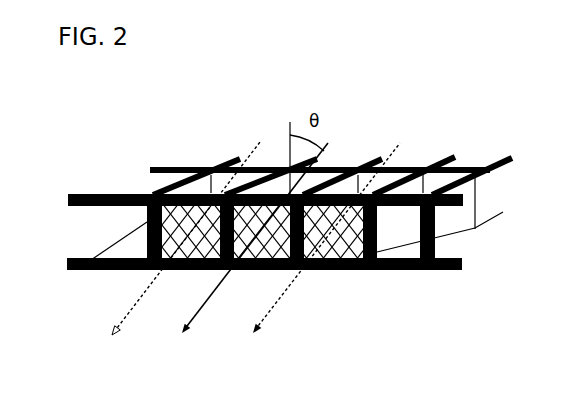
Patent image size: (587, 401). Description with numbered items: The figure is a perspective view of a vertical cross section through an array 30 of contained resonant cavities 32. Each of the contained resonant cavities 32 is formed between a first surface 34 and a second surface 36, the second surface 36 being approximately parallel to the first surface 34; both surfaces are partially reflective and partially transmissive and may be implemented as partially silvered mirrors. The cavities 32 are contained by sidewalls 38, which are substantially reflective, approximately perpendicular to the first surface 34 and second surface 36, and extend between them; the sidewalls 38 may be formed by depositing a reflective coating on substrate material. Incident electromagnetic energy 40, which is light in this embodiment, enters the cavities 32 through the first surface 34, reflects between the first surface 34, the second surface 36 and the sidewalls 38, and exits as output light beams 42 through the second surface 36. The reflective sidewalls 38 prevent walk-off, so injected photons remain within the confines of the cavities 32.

The array 30 is at (389, 100).
The contained resonant cavities 32 is at (193, 247).
The first surface 34 is at (128, 178).
The second surface 36 is at (120, 244).
The sidewalls 38 is at (228, 162).
The incident electromagnetic energy 40 is at (387, 154).
The output light beams 42 is at (182, 336).